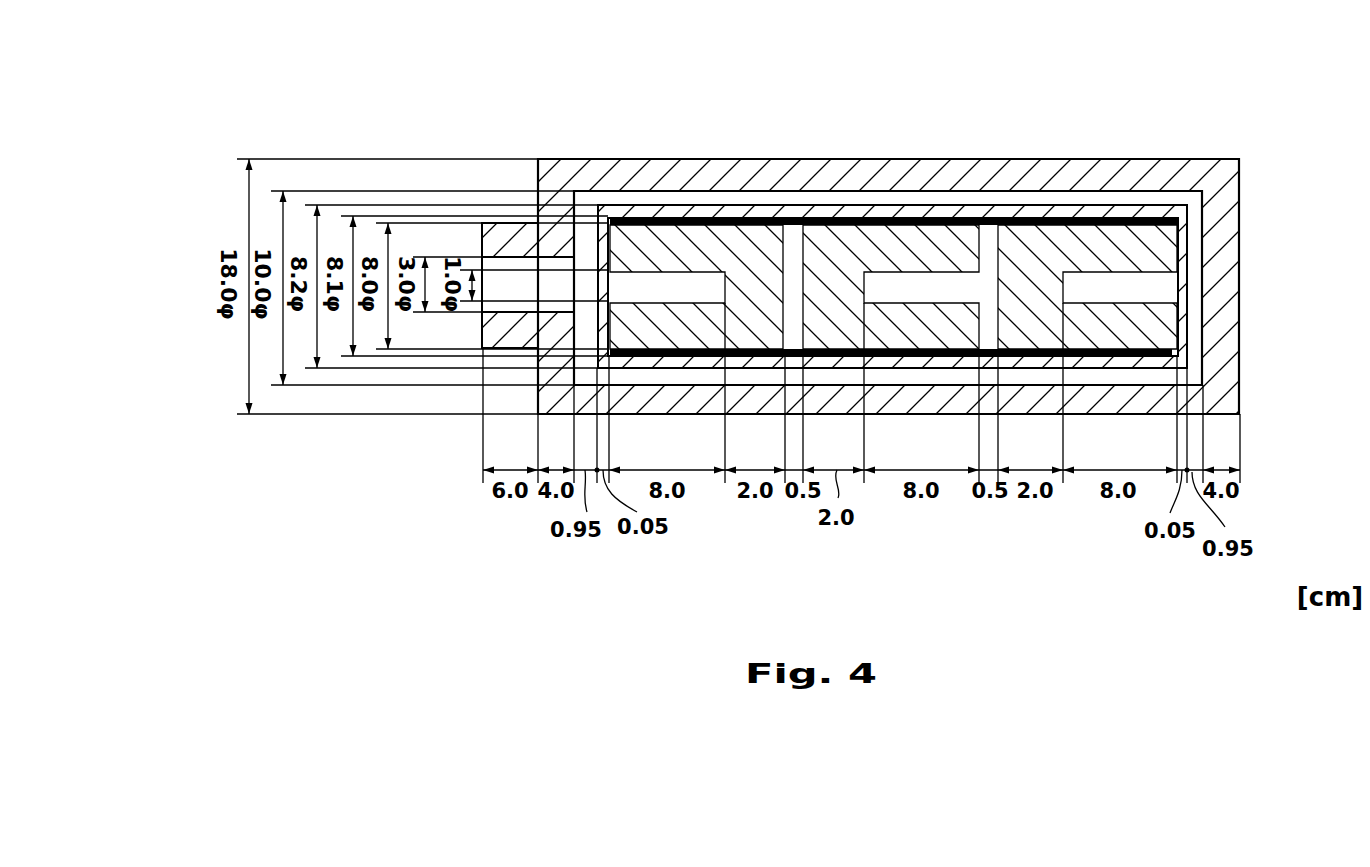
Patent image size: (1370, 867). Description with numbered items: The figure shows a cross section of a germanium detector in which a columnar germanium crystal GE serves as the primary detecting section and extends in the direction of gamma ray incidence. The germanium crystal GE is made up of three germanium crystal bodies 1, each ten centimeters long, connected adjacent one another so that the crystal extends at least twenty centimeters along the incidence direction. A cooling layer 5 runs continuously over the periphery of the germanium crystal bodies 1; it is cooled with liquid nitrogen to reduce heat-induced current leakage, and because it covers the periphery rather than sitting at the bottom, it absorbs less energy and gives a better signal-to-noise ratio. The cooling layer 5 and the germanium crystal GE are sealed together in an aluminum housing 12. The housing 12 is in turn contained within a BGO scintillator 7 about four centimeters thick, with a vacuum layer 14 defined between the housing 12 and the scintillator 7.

The germanium crystal body 1 is at (845, 252).
The cooling layer 5 is at (1178, 220).
The BGO scintillator 7 is at (1160, 177).
The aluminum housing 12 is at (1182, 332).
The vacuum layer 14 is at (668, 195).
The germanium crystal GE is at (954, 222).